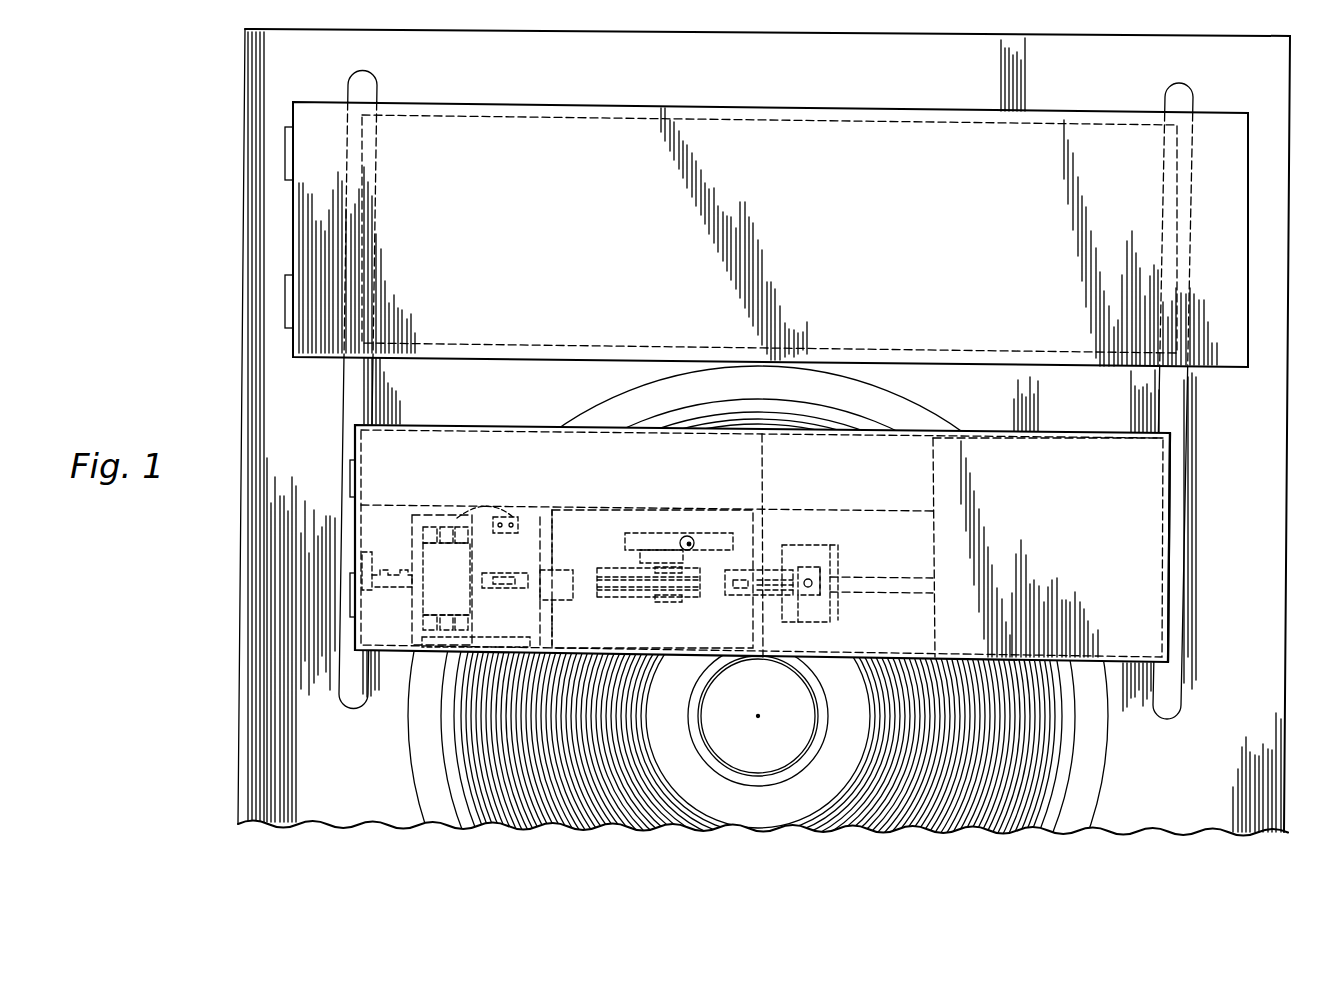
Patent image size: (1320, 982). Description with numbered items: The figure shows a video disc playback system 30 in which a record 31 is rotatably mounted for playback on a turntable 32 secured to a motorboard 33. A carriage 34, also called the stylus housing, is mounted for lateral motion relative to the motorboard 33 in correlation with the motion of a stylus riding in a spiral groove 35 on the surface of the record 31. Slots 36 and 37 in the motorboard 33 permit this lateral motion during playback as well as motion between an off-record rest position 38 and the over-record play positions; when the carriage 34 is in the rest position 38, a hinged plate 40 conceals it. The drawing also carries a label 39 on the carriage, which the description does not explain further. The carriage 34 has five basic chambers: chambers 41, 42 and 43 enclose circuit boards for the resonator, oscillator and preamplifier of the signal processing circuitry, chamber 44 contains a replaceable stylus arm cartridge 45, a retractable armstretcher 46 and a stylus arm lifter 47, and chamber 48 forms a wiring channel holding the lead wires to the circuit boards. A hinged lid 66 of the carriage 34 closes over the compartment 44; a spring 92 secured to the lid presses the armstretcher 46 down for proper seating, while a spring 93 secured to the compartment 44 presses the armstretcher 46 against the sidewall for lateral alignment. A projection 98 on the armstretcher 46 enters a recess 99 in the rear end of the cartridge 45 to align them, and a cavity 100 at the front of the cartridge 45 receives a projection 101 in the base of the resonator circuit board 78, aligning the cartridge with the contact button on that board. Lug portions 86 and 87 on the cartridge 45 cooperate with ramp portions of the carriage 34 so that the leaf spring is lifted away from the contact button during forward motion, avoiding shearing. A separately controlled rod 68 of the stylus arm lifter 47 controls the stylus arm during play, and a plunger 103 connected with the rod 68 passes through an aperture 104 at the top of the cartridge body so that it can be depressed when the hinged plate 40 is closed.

The video disc playback system 30 is at (198, 215).
The record 31 is at (1104, 752).
The turntable 32 is at (1100, 792).
The motorboard 33 is at (1279, 681).
The carriage 34 is at (998, 407).
The spiral groove 35 is at (465, 737).
The slot 36 is at (348, 393).
The slot 37 is at (1177, 412).
The off-record rest position 38 is at (448, 122).
The circuit board edge 39 is at (438, 423).
The hinged plate 40 is at (600, 107).
The chamber 41 is at (905, 641).
The chamber 42 is at (1095, 561).
The chamber 43 is at (863, 484).
The chamber 44 is at (390, 537).
The stylus arm cartridge 45 is at (600, 634).
The armstretcher 46 is at (516, 621).
The stylus arm lifter 47 is at (647, 537).
The chamber 48 is at (448, 479).
The hinged lid 66 is at (1172, 528).
The rod 68 is at (633, 563).
The resonator circuit board 78 is at (886, 581).
The lug portion 86 is at (811, 598).
The lug portion 87 is at (808, 560).
The spring 92 is at (494, 575).
The spring 93 is at (497, 513).
The projection 98 is at (543, 567).
The recess 99 is at (570, 563).
The cavity 100 is at (814, 572).
The projection 101 is at (820, 594).
The plunger 103 is at (690, 546).
The aperture 104 is at (687, 533).